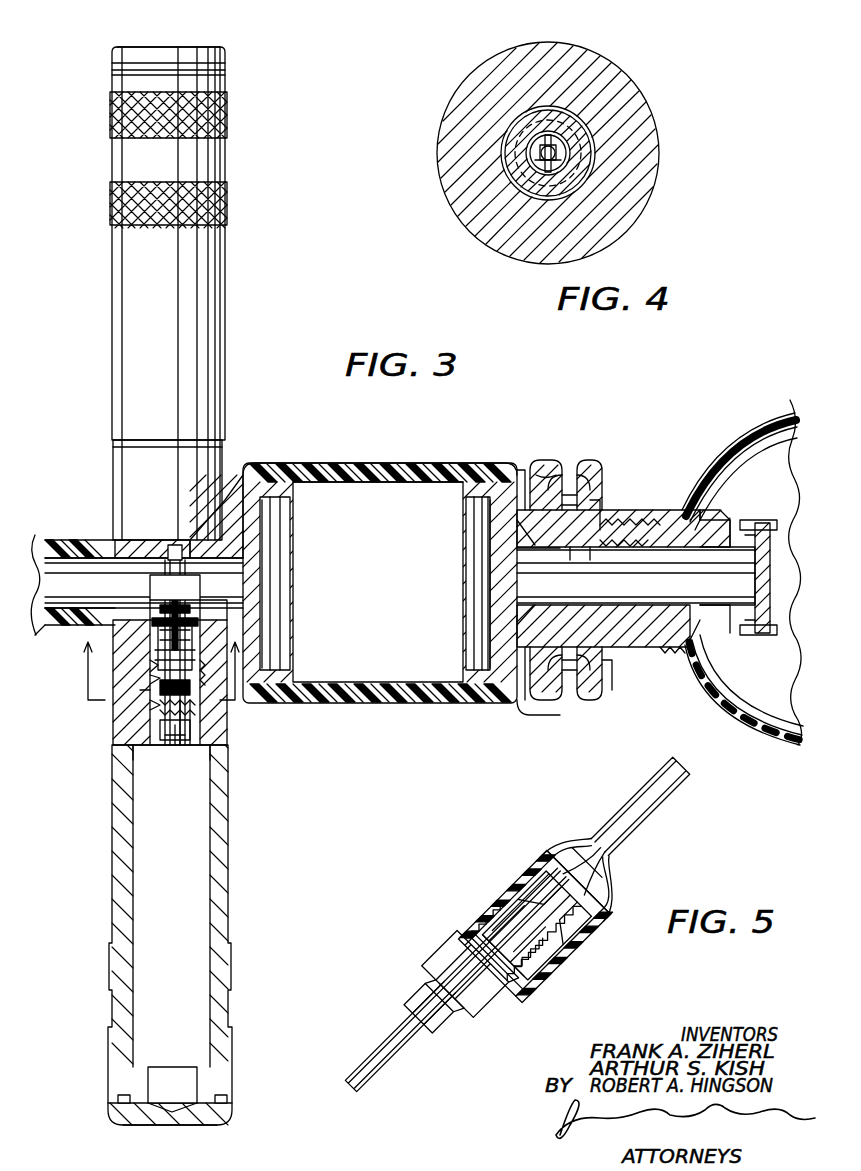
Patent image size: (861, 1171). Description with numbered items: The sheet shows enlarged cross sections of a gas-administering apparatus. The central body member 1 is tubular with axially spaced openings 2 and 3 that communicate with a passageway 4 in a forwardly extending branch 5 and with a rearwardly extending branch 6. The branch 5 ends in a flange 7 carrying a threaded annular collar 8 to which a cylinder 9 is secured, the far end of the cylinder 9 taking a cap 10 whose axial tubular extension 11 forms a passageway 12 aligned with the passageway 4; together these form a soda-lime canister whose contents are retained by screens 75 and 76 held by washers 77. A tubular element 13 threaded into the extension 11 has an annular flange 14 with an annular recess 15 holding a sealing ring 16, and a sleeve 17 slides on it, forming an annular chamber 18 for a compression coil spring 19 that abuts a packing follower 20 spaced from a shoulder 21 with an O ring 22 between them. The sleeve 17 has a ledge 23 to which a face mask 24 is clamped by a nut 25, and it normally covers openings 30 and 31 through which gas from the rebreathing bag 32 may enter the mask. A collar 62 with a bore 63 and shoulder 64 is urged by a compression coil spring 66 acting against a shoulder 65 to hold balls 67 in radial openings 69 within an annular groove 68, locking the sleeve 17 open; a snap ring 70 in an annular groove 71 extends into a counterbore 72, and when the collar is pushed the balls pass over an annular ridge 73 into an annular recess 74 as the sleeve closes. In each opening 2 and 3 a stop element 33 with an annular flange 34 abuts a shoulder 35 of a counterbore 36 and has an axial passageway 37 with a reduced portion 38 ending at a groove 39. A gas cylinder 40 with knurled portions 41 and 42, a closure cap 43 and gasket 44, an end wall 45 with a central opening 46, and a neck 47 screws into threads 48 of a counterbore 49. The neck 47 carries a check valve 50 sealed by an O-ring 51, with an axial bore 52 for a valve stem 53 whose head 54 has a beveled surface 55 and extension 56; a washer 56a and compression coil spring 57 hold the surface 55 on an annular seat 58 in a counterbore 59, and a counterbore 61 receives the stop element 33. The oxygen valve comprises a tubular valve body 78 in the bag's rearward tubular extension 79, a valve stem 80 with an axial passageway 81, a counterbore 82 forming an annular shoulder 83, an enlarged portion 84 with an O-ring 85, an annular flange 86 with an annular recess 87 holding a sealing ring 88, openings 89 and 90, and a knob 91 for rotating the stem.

In FIG. 3, the central body member 1 is at (236, 450).
In FIG. 4, the central body member 1 is at (654, 86).
In FIG. 3, the opening 2 is at (162, 620).
In FIG. 3, the opening 3 is at (140, 545).
In FIG. 3, the passageway 4 is at (95, 560).
In FIG. 3, the forwardly extending branch 5 is at (218, 530).
In FIG. 3, the rearwardly extending branch 6 is at (38, 635).
In FIG. 3, the flange 7 is at (250, 465).
In FIG. 3, the threaded annular collar 8 is at (293, 490).
In FIG. 3, the cylinder 9 is at (372, 463).
In FIG. 3, the cap 10 is at (510, 470).
In FIG. 3, the axial tubular extension 11 is at (492, 560).
In FIG. 3, the passageway 12 is at (540, 580).
In FIG. 3, the tubular element 13 is at (774, 587).
In FIG. 3, the annular flange 14 is at (762, 530).
In FIG. 3, the annular recess 15 is at (755, 523).
In FIG. 3, the sealing ring 16 is at (750, 635).
In FIG. 3, the sleeve 17 is at (660, 510).
In FIG. 3, the annular chamber 18 is at (630, 520).
In FIG. 3, the compression coil spring 19 is at (612, 535).
In FIG. 3, the packing follower 20 is at (640, 650).
In FIG. 3, the shoulder 21 is at (690, 590).
In FIG. 3, the O ring 22 is at (690, 510).
In FIG. 3, the annular shoulder or ledge 23 is at (672, 655).
In FIG. 3, the face mask 24 is at (770, 425).
In FIG. 3, the nut 25 is at (740, 675).
In FIG. 3, the opening 30 is at (720, 625).
In FIG. 3, the opening 31 is at (730, 547).
In FIG. 3, the rebreathing bag 32 is at (45, 545).
In FIG. 5, the rebreathing bag 32 is at (650, 820).
In FIG. 3, the stop element 33 is at (172, 545).
In FIG. 4, the stop element 33 is at (560, 155).
In FIG. 3, the annular flange 34 is at (195, 620).
In FIG. 4, the annular flange 34 is at (585, 172).
In FIG. 3, the shoulder 35 is at (150, 590).
In FIG. 3, the counterbore 36 is at (195, 650).
In FIG. 4, the counterbore 36 is at (572, 130).
In FIG. 3, the axial passageway 37 is at (178, 610).
In FIG. 4, the axial passageway 37 is at (545, 190).
In FIG. 3, the portion of reduced diameter 38 is at (205, 608).
In FIG. 4, the portion of reduced diameter 38 is at (560, 145).
In FIG. 3, the channel or groove 39 is at (192, 655).
In FIG. 4, the channel or groove 39 is at (545, 140).
In FIG. 3, the cylinder 40 is at (222, 293).
In FIG. 3, the knurled portion 41 is at (227, 200).
In FIG. 3, the knurled portion 42 is at (227, 114).
In FIG. 3, the closure cap 43 is at (185, 47).
In FIG. 3, the gasket 44 is at (225, 70).
In FIG. 3, the wall 45 is at (150, 745).
In FIG. 3, the central opening 46 is at (165, 745).
In FIG. 3, the neck 47 is at (150, 720).
In FIG. 3, the threads 48 is at (158, 705).
In FIG. 3, the counterbore 49 is at (205, 700).
In FIG. 3, the check valve 50 is at (155, 690).
In FIG. 4, the check valve 50 is at (520, 185).
In FIG. 3, the O-ring 51 is at (150, 668).
In FIG. 3, the axial bore 52 is at (150, 680).
In FIG. 3, the valve stem 53 is at (210, 690).
In FIG. 3, the head 54 is at (190, 745).
In FIG. 3, the beveled surface 55 is at (180, 745).
In FIG. 3, the extension 56 is at (172, 740).
In FIG. 3, the washer 56a is at (160, 712).
In FIG. 3, the compression coil spring 57 is at (178, 745).
In FIG. 3, the annular seat 58 is at (140, 690).
In FIG. 3, the counterbore 59 is at (150, 705).
In FIG. 3, the counterbore 61 is at (152, 642).
In FIG. 3, the collar 62 is at (585, 475).
In FIG. 3, the bore 63 is at (605, 510).
In FIG. 3, the shoulder 64 is at (548, 690).
In FIG. 3, the shoulder 65 is at (598, 660).
In FIG. 3, the compression coil spring 66 is at (595, 680).
In FIG. 3, the balls 67 is at (565, 470).
In FIG. 3, the annular groove 68 is at (525, 690).
In FIG. 3, the radial openings 69 is at (598, 495).
In FIG. 3, the snap ring 70 is at (512, 705).
In FIG. 3, the annular groove 71 is at (515, 570).
In FIG. 3, the counterbore 72 is at (540, 500).
In FIG. 3, the annular ridge 73 is at (600, 700).
In FIG. 3, the annular recess 74 is at (588, 555).
In FIG. 3, the screen 75 is at (275, 565).
In FIG. 3, the screen 76 is at (490, 565).
In FIG. 3, the washers 77 is at (275, 510).
In FIG. 5, the tubular valve body 78 is at (478, 945).
In FIG. 5, the rearward tubular extension 79 is at (525, 1000).
In FIG. 5, the valve stem 80 is at (420, 1040).
In FIG. 5, the axial passageway 81 is at (410, 1050).
In FIG. 5, the counterbore 82 is at (500, 890).
In FIG. 5, the annular shoulder 83 is at (540, 955).
In FIG. 5, the portion of enlarged diameter 84 is at (565, 975).
In FIG. 5, the O-ring 85 is at (575, 950).
In FIG. 5, the annular flange 86 is at (548, 850).
In FIG. 5, the annular recess 87 is at (568, 880).
In FIG. 5, the sealing ring 88 is at (590, 922).
In FIG. 5, the opening 89 is at (525, 870).
In FIG. 5, the opening 90 is at (580, 940).
In FIG. 5, the knob 91 is at (455, 1035).